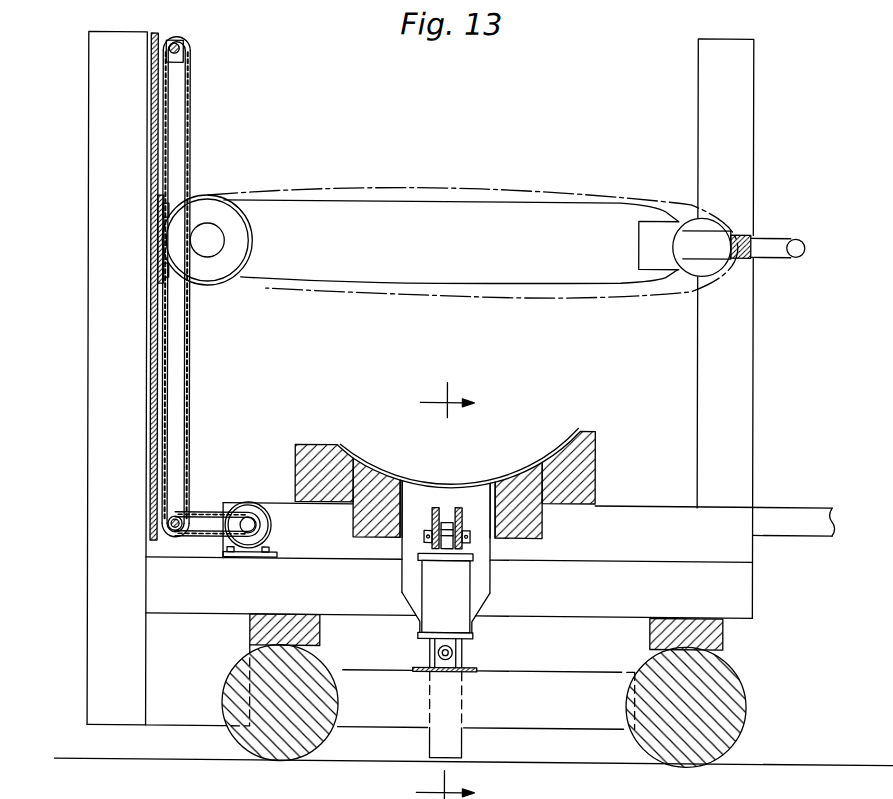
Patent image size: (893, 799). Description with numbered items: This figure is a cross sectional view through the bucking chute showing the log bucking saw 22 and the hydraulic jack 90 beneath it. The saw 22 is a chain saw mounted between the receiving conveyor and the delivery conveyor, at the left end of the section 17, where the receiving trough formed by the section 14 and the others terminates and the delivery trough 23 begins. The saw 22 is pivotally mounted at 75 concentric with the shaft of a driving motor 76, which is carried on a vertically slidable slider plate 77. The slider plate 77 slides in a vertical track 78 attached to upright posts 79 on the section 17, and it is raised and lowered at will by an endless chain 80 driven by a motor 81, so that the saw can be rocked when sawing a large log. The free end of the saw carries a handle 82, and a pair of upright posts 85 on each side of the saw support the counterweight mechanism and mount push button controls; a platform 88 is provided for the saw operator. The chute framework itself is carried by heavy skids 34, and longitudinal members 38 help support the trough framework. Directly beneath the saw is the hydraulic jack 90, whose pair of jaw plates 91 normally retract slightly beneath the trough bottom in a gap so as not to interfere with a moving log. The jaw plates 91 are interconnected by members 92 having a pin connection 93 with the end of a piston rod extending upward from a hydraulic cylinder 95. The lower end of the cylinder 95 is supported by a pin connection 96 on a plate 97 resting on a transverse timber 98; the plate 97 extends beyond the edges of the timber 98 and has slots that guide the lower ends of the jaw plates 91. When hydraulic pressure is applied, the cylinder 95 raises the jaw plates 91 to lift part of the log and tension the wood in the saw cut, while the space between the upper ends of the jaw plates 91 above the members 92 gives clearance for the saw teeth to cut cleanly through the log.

The section 14 is at (445, 578).
The section 17 is at (598, 463).
The log bucking saw 22 is at (450, 203).
The delivery trough 23 is at (340, 444).
The skids 34 is at (226, 690).
The longitudinal members 38 is at (281, 612).
The pivot 75 is at (205, 243).
The driving motor 76 is at (216, 280).
The slider plate 77 is at (157, 251).
The vertical track 78 is at (151, 152).
The upright posts 79 is at (95, 52).
The endless chain 80 is at (167, 118).
The motor 81 is at (243, 502).
The handle 82 is at (797, 252).
The upright posts 85 is at (745, 47).
The platform 88 is at (800, 521).
The hydraulic jack 90 is at (497, 587).
The jaw plates 91 is at (412, 490).
The members 92 is at (458, 505).
The pin connection 93 is at (426, 532).
The hydraulic cylinder 95 is at (432, 577).
The pin connection 96 is at (436, 649).
The plate 97 is at (474, 664).
The transverse timber 98 is at (571, 673).